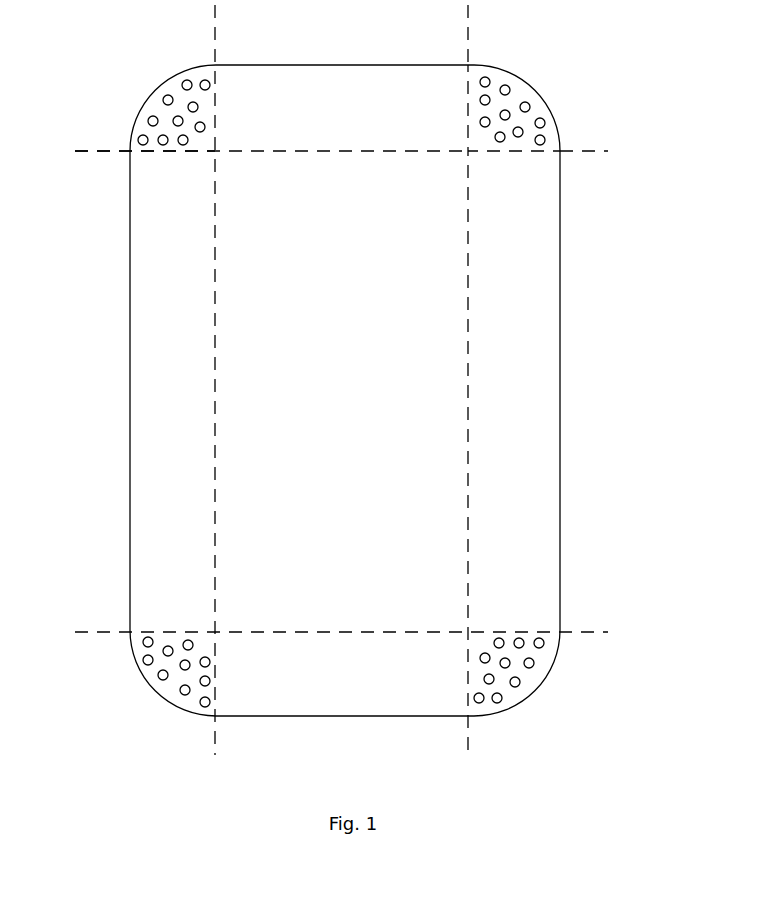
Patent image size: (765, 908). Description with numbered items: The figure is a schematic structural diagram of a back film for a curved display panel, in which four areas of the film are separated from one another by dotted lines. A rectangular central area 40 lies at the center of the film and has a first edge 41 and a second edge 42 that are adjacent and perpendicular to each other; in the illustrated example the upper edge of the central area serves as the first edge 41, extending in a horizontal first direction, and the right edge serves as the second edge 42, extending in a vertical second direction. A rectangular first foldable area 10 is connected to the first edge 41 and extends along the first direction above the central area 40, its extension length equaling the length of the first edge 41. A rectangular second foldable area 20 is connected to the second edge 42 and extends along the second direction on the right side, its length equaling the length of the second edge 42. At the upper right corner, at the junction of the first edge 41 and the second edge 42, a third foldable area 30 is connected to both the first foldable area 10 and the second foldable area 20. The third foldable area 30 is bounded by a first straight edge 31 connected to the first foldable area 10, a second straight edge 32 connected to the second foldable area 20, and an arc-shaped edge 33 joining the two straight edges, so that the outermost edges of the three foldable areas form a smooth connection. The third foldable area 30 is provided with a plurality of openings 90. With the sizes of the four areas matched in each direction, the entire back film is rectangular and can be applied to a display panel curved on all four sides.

The first foldable area 10 is at (307, 85).
The second foldable area 20 is at (552, 313).
The third foldable area 30 is at (499, 121).
The first straight edge 31 is at (466, 105).
The second straight edge 32 is at (515, 154).
The arc-shaped edge 33 is at (502, 72).
The central area 40 is at (320, 610).
The first edge 41 is at (350, 153).
The second edge 42 is at (466, 268).
The openings 90 is at (540, 123).